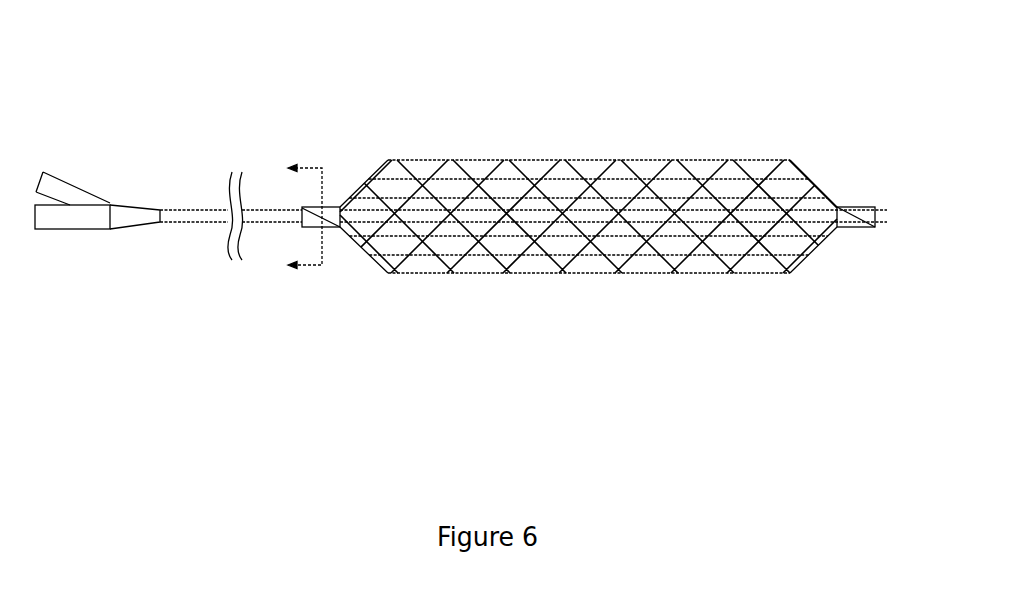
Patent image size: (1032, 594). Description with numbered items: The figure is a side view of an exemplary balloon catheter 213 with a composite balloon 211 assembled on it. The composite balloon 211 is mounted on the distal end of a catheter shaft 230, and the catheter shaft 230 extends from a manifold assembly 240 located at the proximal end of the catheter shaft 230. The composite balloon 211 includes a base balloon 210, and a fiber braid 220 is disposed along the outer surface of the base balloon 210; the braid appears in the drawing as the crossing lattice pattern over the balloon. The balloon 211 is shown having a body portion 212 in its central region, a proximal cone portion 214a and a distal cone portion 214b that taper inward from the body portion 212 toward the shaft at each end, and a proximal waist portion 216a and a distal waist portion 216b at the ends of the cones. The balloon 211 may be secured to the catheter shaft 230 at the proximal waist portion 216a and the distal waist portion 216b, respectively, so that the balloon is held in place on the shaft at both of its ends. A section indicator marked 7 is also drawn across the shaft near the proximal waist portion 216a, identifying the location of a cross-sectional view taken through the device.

The composite balloon 211 is at (658, 116).
The balloon catheter 213 is at (331, 80).
The base balloon 210 is at (503, 160).
The body portion 212 is at (723, 160).
The fiber braid 220 is at (788, 173).
The proximal cone portion 214a is at (362, 188).
The distal cone portion 214b is at (800, 263).
The proximal waist portion 216a is at (333, 228).
The distal waist portion 216b is at (868, 207).
The catheter shaft 230 is at (192, 225).
The manifold assembly 240 is at (72, 229).
The section line 7- 7 is at (297, 216).